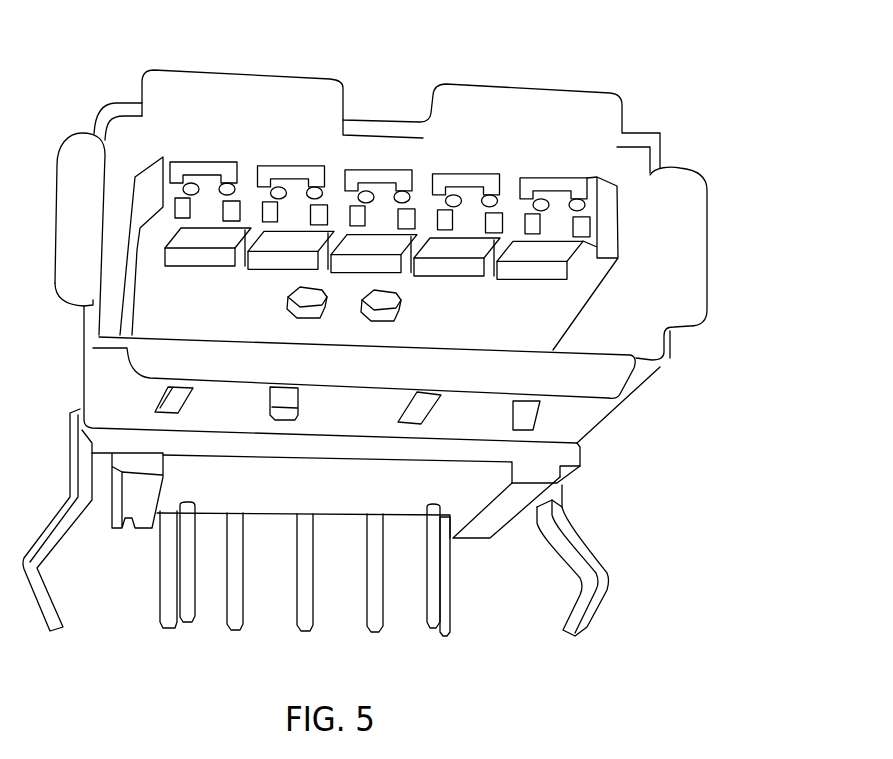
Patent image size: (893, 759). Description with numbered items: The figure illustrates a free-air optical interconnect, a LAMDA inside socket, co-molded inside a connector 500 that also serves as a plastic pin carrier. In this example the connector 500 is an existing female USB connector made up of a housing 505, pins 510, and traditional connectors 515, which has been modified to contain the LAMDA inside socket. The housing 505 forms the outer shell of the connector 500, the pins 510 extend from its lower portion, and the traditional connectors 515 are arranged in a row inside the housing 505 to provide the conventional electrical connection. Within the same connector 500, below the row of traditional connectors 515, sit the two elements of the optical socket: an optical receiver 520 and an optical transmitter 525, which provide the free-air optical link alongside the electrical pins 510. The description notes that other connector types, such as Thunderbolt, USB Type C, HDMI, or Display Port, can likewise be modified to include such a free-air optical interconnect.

The connector 500 is at (697, 30).
The housing 505 is at (98, 342).
The pins 510 is at (183, 622).
The traditional connectors 515 is at (620, 211).
The optical receiver (RX) 520 is at (306, 312).
The optical transmitter (TX) 525 is at (386, 316).